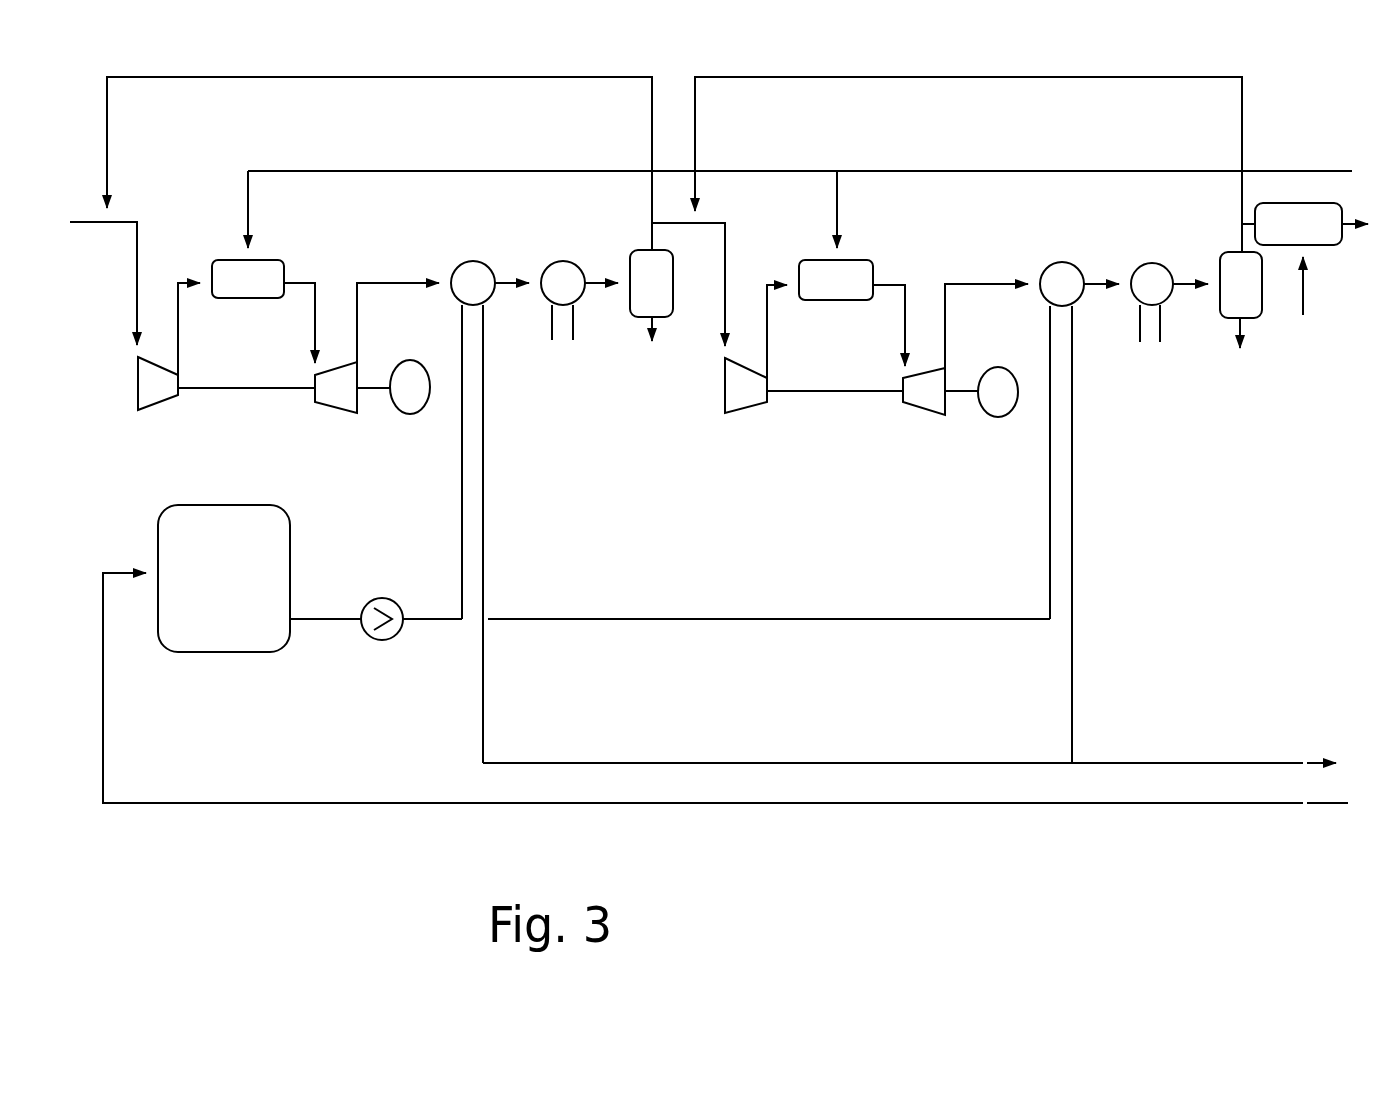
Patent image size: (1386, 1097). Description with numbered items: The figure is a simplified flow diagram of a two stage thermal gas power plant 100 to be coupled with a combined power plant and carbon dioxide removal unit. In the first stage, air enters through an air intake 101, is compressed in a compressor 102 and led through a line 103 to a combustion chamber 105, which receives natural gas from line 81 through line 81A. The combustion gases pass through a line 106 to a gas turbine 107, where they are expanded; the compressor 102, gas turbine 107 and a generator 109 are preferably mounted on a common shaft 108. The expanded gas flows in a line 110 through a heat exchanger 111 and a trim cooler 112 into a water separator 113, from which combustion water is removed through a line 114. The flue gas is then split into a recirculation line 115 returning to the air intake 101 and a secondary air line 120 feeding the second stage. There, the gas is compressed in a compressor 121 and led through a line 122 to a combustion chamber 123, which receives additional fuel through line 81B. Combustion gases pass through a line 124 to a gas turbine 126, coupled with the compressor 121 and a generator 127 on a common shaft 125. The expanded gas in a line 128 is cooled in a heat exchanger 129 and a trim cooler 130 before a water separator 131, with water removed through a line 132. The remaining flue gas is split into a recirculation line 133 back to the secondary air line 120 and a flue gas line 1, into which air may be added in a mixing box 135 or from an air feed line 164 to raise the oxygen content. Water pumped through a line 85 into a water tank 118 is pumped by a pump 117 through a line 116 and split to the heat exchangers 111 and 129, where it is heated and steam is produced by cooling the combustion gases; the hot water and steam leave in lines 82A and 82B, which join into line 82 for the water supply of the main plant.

The flue gas line 1 is at (1360, 238).
The line 81 is at (1278, 172).
The line 81A is at (247, 225).
The line 81B is at (845, 213).
The line 82 is at (1293, 760).
The line 82A is at (483, 481).
The line 82B is at (1070, 470).
The line 85 is at (378, 795).
The thermal gas power plant 100 is at (1197, 572).
The air intake 101 is at (136, 297).
The compressor 102 is at (173, 411).
The line 103 is at (178, 284).
The combustion chamber 105 is at (248, 279).
The line 106 is at (305, 283).
The gas turbine 107 is at (323, 411).
The common shaft 108 is at (278, 383).
The generator 109 is at (427, 403).
The line 110 is at (373, 282).
The heat exchanger 111 is at (484, 262).
The trim cooler 112 is at (551, 264).
The water separator 113 is at (674, 293).
The line 114 is at (642, 336).
The recirculation line 115 is at (398, 78).
The line 116 is at (330, 612).
The pump 117 is at (392, 640).
The water tank 118 is at (224, 578).
The secondary air line 120 is at (717, 222).
The compressor 121 is at (743, 406).
The line 122 is at (768, 285).
The combustion chamber 123 is at (836, 280).
The line 124 is at (894, 289).
The common shaft 125 is at (810, 385).
The gas turbine 126 is at (893, 406).
The generator 127 is at (1016, 415).
The line 128 is at (965, 291).
The heat exchanger 129 is at (1088, 262).
The trim cooler 130 is at (1173, 277).
The water separator 131 is at (1253, 309).
The line 132 is at (1228, 341).
The recirculation line 133 is at (1175, 80).
The mixing box 135 is at (1292, 224).
The air feed line 164 is at (1307, 291).